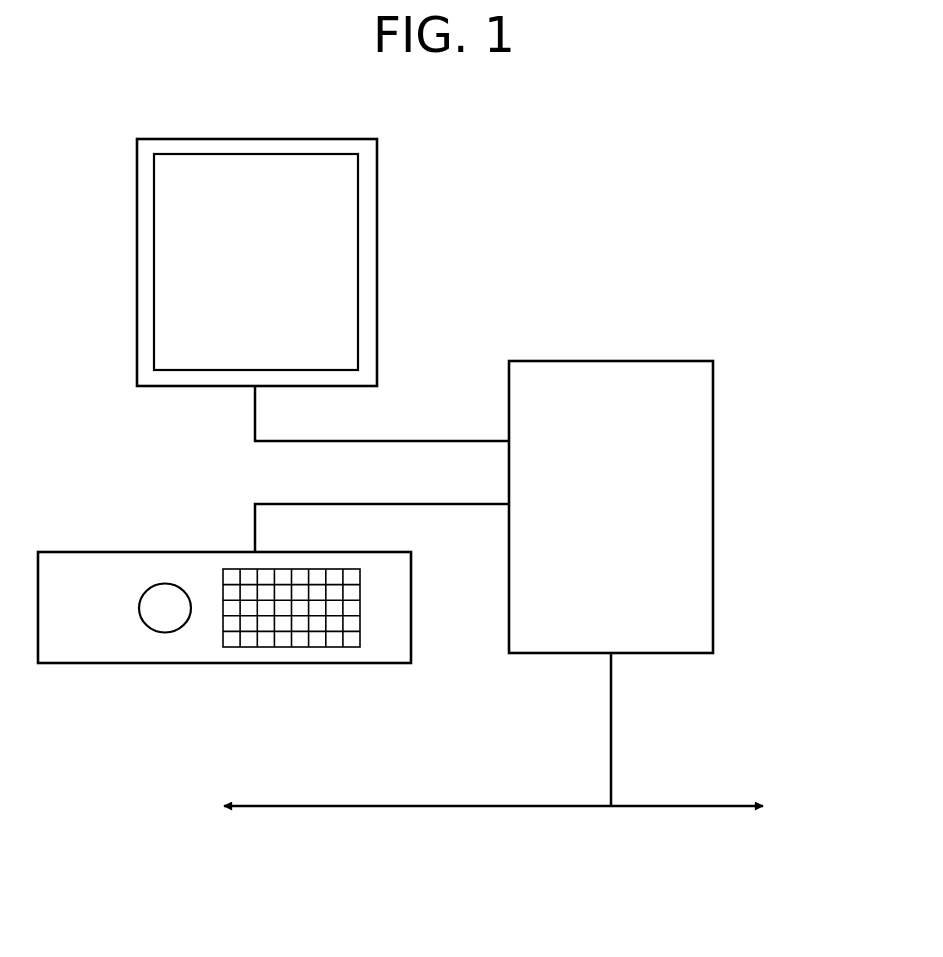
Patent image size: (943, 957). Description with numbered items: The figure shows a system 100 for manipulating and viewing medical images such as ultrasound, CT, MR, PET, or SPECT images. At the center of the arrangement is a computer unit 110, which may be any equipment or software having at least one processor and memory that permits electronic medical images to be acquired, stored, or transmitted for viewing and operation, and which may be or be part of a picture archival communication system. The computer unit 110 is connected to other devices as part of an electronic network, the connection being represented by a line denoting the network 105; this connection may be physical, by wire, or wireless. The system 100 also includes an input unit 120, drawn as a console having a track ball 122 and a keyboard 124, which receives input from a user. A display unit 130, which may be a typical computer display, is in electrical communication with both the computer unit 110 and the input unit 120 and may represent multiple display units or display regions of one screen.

The system 100 is at (789, 250).
The network 105 is at (337, 814).
The computer unit 110 is at (599, 352).
The input unit 120 is at (88, 667).
The track ball 122 is at (157, 642).
The keyboard 124 is at (340, 651).
The display unit 130 is at (387, 231).